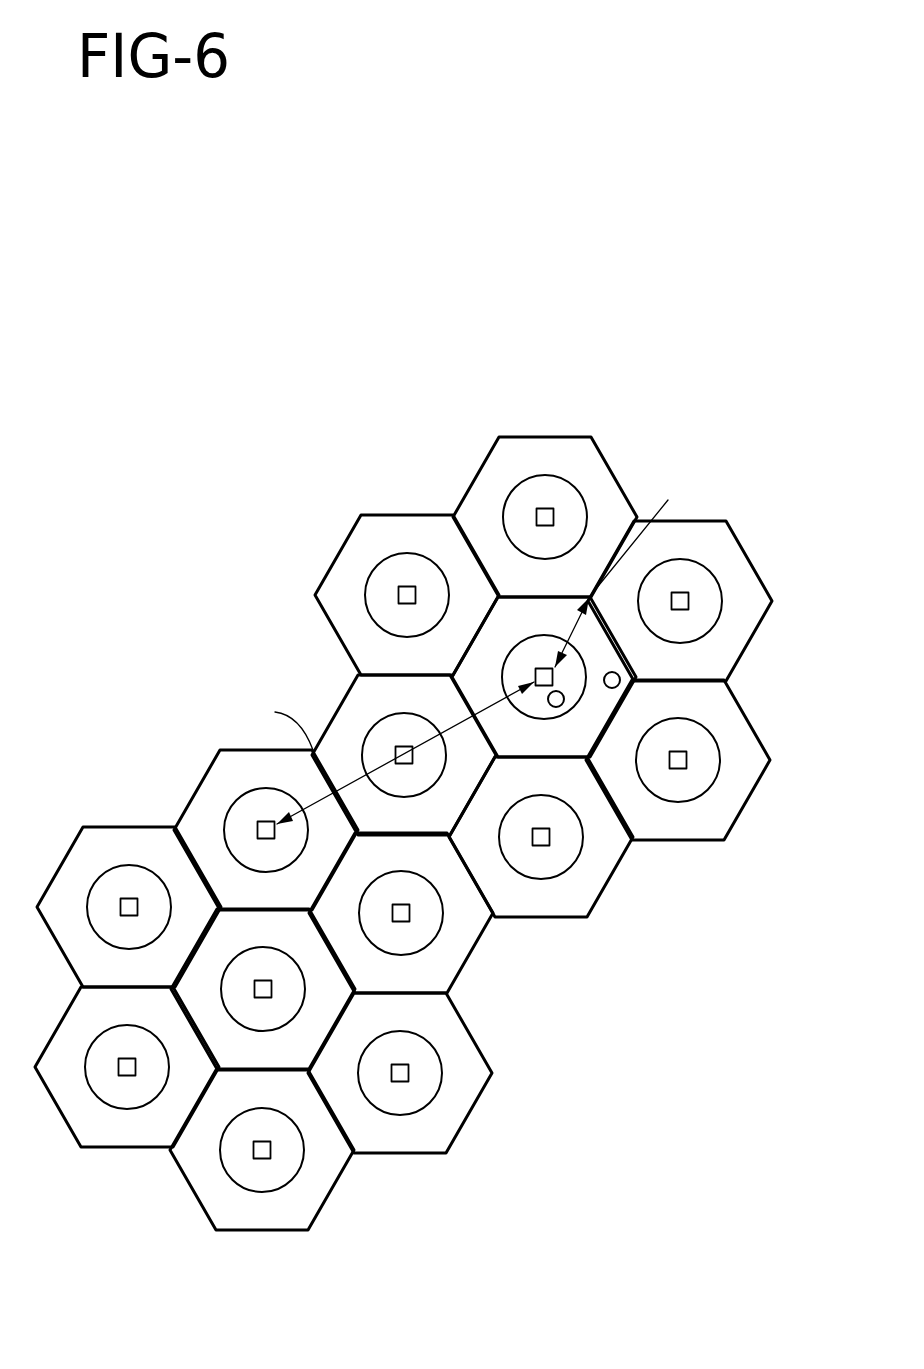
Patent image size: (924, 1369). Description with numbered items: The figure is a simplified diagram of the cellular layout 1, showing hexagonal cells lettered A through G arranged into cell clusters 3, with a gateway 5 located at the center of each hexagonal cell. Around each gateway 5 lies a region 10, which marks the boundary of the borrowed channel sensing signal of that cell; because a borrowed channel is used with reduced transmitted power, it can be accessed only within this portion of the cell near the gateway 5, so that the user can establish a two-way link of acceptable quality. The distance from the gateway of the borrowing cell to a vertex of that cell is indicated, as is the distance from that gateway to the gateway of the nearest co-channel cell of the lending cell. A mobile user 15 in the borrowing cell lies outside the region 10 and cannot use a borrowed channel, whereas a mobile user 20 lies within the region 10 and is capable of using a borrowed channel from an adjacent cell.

The cellular communication system 1 is at (531, 336).
The cell cluster 3 is at (342, 547).
The base station 5 is at (536, 518).
The borrowed channel sensing signal region 10 is at (573, 483).
The mobile user 15 is at (622, 683).
The mobile user 20 is at (564, 700).